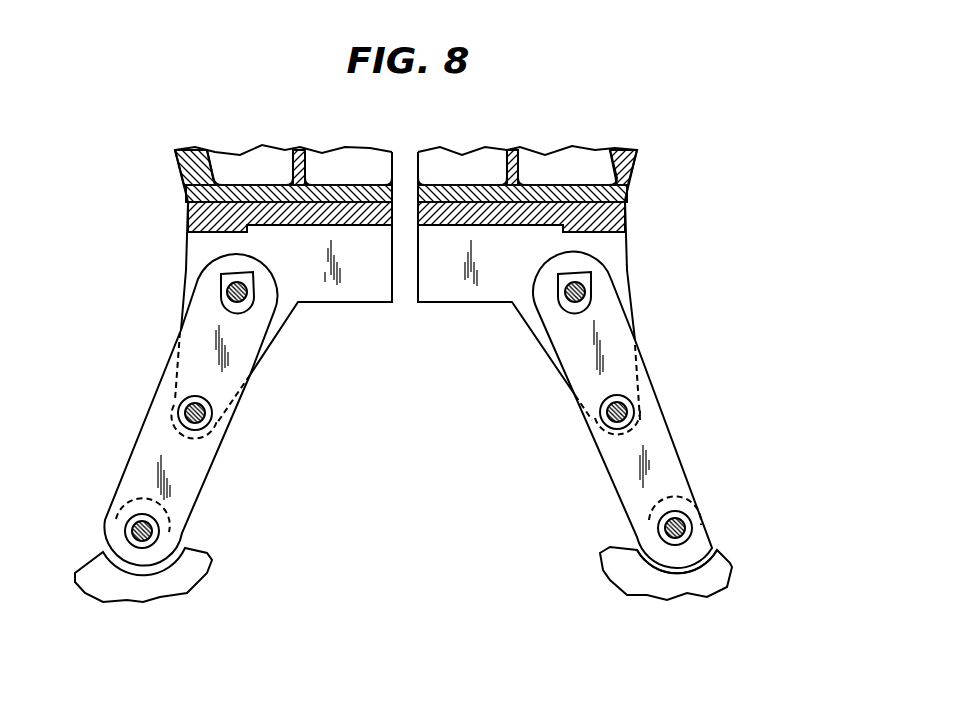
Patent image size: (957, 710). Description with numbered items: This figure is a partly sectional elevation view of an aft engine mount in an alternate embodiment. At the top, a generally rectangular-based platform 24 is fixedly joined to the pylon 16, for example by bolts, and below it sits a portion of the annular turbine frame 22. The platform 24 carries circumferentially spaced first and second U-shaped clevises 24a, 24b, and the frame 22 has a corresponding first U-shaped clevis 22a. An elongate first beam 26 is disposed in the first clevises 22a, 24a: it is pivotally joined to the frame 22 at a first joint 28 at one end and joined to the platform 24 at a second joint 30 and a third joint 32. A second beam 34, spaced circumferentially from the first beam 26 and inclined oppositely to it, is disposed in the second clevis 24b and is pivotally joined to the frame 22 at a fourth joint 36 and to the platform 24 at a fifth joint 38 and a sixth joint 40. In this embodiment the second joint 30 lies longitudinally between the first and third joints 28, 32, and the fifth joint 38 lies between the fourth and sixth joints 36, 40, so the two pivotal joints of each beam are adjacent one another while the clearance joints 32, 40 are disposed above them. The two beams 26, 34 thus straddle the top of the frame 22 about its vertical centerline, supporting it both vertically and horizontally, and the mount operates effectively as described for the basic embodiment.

The pylon 16 is at (623, 173).
The platform 24 is at (627, 220).
The first U-shaped clevis of the platform 24a is at (627, 265).
The second U-shaped clevis of the platform 24b is at (182, 272).
The first beam 26 is at (670, 450).
The first joint 28 is at (656, 518).
The second joint 30 is at (598, 410).
The third joint 32 is at (560, 294).
The second beam 34 is at (137, 433).
The fourth joint 36 is at (130, 510).
The fifth joint 38 is at (181, 402).
The sixth joint 40 is at (215, 294).
The turbine frame 22 is at (737, 569).
The first U-shaped clevis of the frame 22a is at (720, 552).